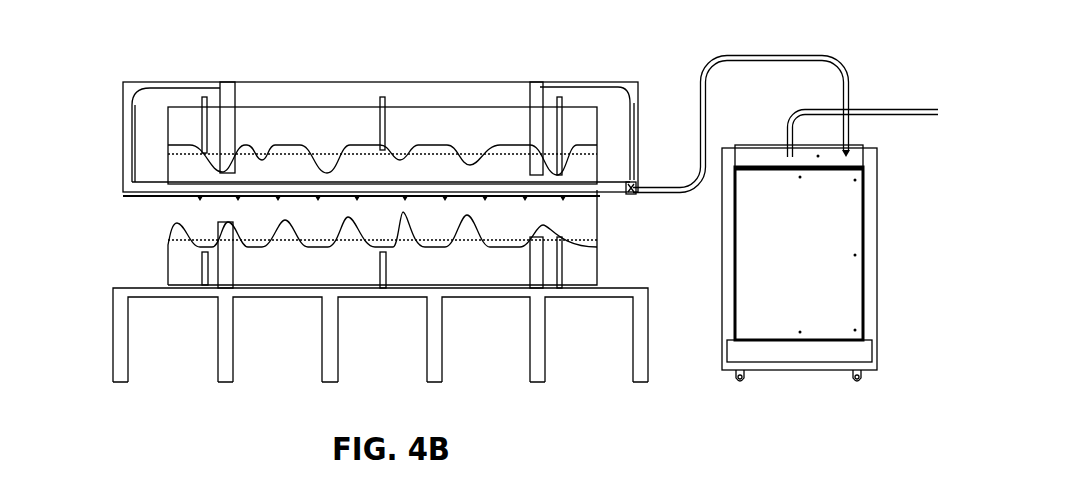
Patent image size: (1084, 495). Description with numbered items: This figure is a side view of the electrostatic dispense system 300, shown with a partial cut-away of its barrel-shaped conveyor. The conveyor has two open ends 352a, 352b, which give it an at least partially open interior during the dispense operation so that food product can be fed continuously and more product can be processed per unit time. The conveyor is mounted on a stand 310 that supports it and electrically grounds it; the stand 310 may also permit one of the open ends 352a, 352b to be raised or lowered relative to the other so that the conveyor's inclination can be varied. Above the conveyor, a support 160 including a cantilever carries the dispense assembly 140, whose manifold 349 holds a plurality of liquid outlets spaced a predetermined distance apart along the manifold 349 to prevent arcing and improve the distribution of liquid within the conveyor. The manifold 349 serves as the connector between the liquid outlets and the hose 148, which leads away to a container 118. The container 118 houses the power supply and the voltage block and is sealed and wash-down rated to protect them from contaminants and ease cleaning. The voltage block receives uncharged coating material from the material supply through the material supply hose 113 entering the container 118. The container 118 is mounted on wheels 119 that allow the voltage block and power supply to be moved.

The electrostatic dispense system 300 is at (194, 35).
The support 160 is at (613, 72).
The dispense assembly 140 is at (178, 198).
The open end 352a is at (167, 224).
The open end 352b is at (598, 223).
The stand 310 is at (122, 325).
The manifold 349 is at (602, 190).
The hose 148 is at (761, 57).
The material supply hose 113 is at (893, 110).
The container 118 is at (866, 268).
The wheels 119 is at (862, 378).